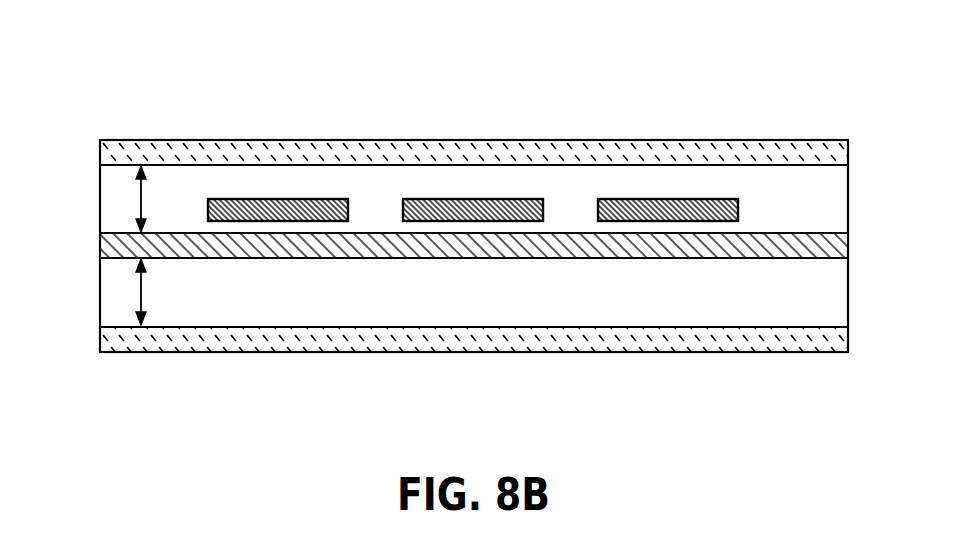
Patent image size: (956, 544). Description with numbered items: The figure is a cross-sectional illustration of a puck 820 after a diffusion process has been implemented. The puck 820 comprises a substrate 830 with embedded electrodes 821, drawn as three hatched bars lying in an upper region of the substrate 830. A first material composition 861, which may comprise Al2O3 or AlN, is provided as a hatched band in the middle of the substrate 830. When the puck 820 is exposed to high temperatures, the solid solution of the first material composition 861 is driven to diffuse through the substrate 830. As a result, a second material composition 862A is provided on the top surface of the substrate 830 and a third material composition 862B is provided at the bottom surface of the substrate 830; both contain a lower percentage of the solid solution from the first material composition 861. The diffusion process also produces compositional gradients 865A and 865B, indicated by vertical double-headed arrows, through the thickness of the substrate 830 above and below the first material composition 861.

The puck 820 is at (773, 78).
The electrodes 821 is at (494, 196).
The substrate 830 is at (807, 305).
The first material composition 861 is at (278, 248).
The second material composition 862A is at (362, 157).
The third material composition 862B is at (405, 346).
The compositional gradient 865A is at (141, 200).
The compositional gradient 865B is at (141, 290).